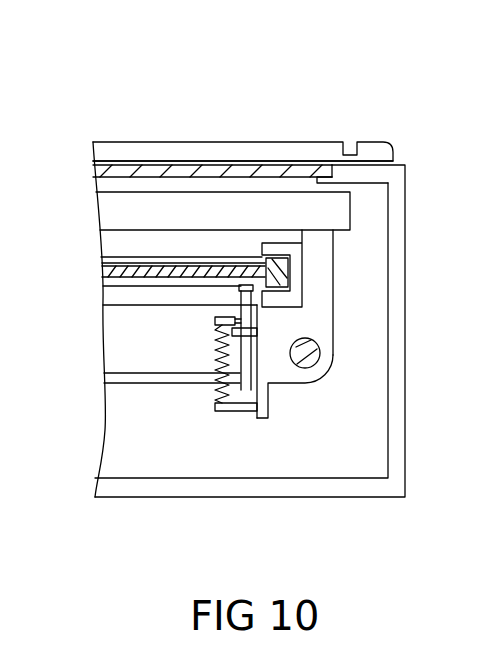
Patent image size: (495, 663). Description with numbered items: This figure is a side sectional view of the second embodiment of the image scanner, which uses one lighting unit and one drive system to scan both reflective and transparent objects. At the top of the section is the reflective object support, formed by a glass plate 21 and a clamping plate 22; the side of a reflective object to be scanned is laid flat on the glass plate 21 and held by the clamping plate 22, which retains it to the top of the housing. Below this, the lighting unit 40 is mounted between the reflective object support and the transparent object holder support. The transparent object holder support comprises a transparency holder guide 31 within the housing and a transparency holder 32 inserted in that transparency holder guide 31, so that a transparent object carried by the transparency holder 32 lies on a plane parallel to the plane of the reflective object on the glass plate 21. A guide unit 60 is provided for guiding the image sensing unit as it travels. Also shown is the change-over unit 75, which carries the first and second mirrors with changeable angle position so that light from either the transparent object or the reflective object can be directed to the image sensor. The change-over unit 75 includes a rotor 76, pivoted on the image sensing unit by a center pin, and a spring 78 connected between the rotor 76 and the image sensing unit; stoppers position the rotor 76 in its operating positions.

The glass plate 21 is at (187, 142).
The clamping plate 22 is at (142, 142).
The transparency holder guide 31 is at (298, 268).
The transparency holder 32 is at (103, 266).
The lighting unit 40 is at (213, 208).
The guide unit 60 is at (312, 358).
The change-over unit 75 is at (236, 425).
The rotor 76 is at (245, 368).
The spring 78 is at (217, 353).